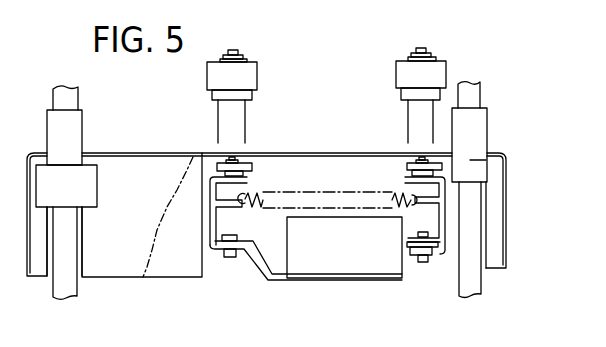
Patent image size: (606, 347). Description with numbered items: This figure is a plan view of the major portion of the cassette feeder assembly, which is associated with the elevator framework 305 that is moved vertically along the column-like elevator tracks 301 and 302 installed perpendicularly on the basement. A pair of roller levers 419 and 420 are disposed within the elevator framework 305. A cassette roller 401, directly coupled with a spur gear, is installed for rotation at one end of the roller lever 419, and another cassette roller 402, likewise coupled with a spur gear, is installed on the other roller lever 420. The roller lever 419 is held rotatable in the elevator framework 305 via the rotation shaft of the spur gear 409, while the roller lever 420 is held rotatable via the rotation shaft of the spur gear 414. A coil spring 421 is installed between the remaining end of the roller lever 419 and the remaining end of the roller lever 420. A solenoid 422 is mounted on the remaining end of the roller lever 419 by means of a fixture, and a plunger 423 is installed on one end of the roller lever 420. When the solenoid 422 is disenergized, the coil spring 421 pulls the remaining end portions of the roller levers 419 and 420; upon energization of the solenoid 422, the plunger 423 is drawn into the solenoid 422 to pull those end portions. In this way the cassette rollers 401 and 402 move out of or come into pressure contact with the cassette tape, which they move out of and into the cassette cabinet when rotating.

The elevator track 301 is at (72, 292).
The elevator track 302 is at (475, 287).
The elevator framework 305 is at (301, 152).
The cassette roller 401 is at (252, 77).
The cassette roller 402 is at (441, 73).
The spur gear 409 is at (213, 165).
The spur gear 414 is at (405, 163).
The roller lever 419 is at (213, 252).
The roller lever 420 is at (441, 252).
The coil spring 421 is at (323, 200).
The solenoid 422 is at (320, 268).
The plunger 423 is at (410, 253).